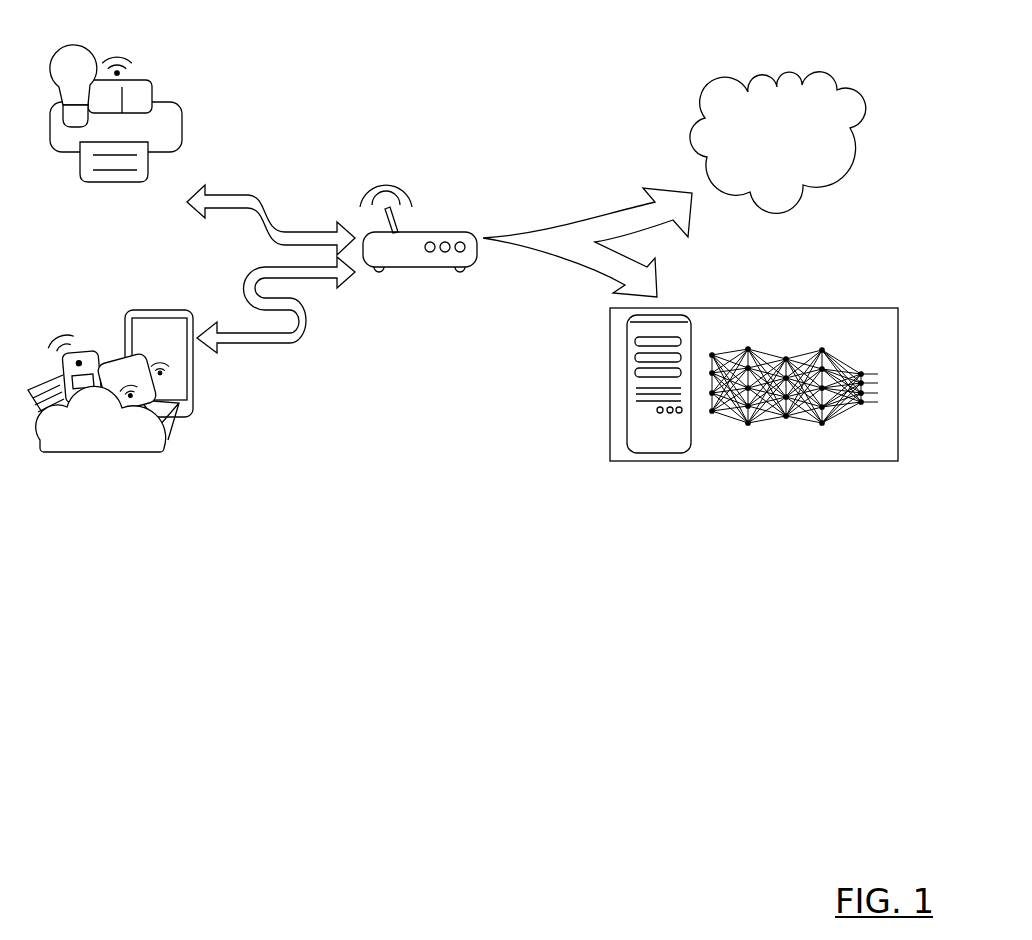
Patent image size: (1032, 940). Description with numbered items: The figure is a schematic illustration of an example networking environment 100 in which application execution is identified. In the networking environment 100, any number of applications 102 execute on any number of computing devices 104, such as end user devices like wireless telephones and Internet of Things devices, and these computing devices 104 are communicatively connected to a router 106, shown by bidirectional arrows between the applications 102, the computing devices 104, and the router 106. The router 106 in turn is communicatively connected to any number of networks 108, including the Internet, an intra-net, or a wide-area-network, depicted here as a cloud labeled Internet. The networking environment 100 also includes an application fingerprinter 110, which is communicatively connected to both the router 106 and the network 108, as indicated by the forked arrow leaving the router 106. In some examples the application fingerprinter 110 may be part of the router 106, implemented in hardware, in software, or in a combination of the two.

The networking environment 100 is at (529, 60).
The applications 102 is at (80, 320).
The computing devices 104 is at (200, 110).
The router 106 is at (438, 222).
The network 108 is at (835, 73).
The application fingerprinter 110 is at (698, 307).